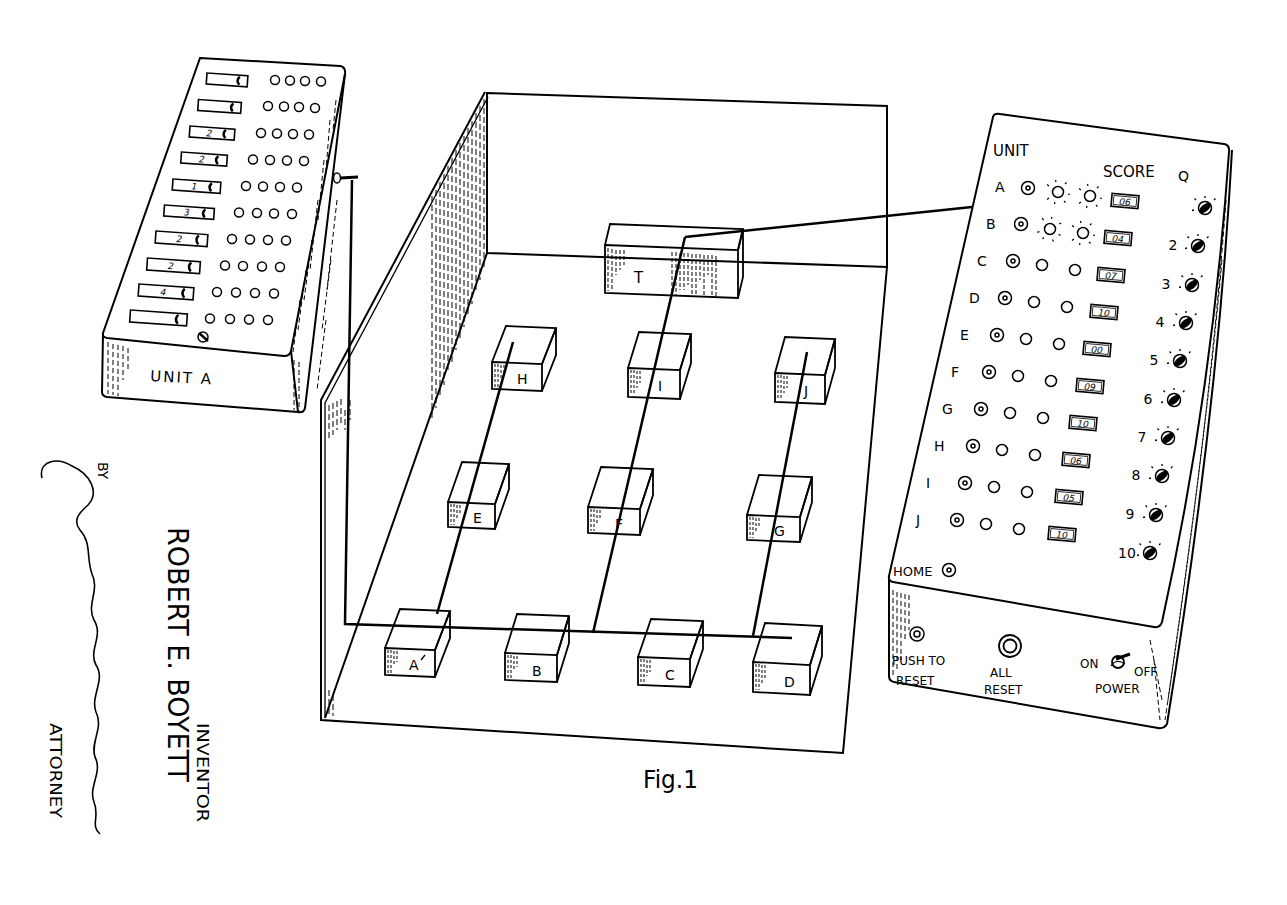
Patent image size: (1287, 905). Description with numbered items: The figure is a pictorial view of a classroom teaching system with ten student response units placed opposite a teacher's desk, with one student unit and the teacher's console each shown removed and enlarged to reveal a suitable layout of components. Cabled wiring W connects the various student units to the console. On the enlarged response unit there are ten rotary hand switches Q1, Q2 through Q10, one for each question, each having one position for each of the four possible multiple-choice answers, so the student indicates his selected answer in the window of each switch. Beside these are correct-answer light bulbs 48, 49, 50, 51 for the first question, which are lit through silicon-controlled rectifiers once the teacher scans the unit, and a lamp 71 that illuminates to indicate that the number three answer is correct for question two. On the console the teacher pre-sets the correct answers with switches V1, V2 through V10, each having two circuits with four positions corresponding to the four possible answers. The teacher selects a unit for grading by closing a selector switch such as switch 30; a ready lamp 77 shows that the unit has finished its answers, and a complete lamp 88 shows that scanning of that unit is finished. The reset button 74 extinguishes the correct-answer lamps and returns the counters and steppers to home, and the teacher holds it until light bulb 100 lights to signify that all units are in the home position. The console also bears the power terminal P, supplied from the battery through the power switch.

The light bulb 48 is at (275, 75).
The light bulb 49 is at (290, 75).
The light bulb 50 is at (305, 76).
The light bulb 51 is at (322, 76).
The lamp 71 is at (299, 112).
The rotary hand switch Q1 is at (206, 78).
The rotary hand switch Q2 is at (198, 104).
The rotary hand switch Q10 is at (132, 315).
The cabled wiring W is at (353, 217).
The selector switch 30 is at (1029, 182).
The lamp 77 is at (1058, 186).
The lamp 88 is at (1090, 190).
The correct answer switch V1 is at (1211, 204).
The correct answer switch V2 is at (1204, 247).
The correct answer switch V10 is at (1160, 556).
The reset button 74 is at (909, 636).
The light bulb 100 is at (1000, 640).
The power terminal P is at (1128, 668).